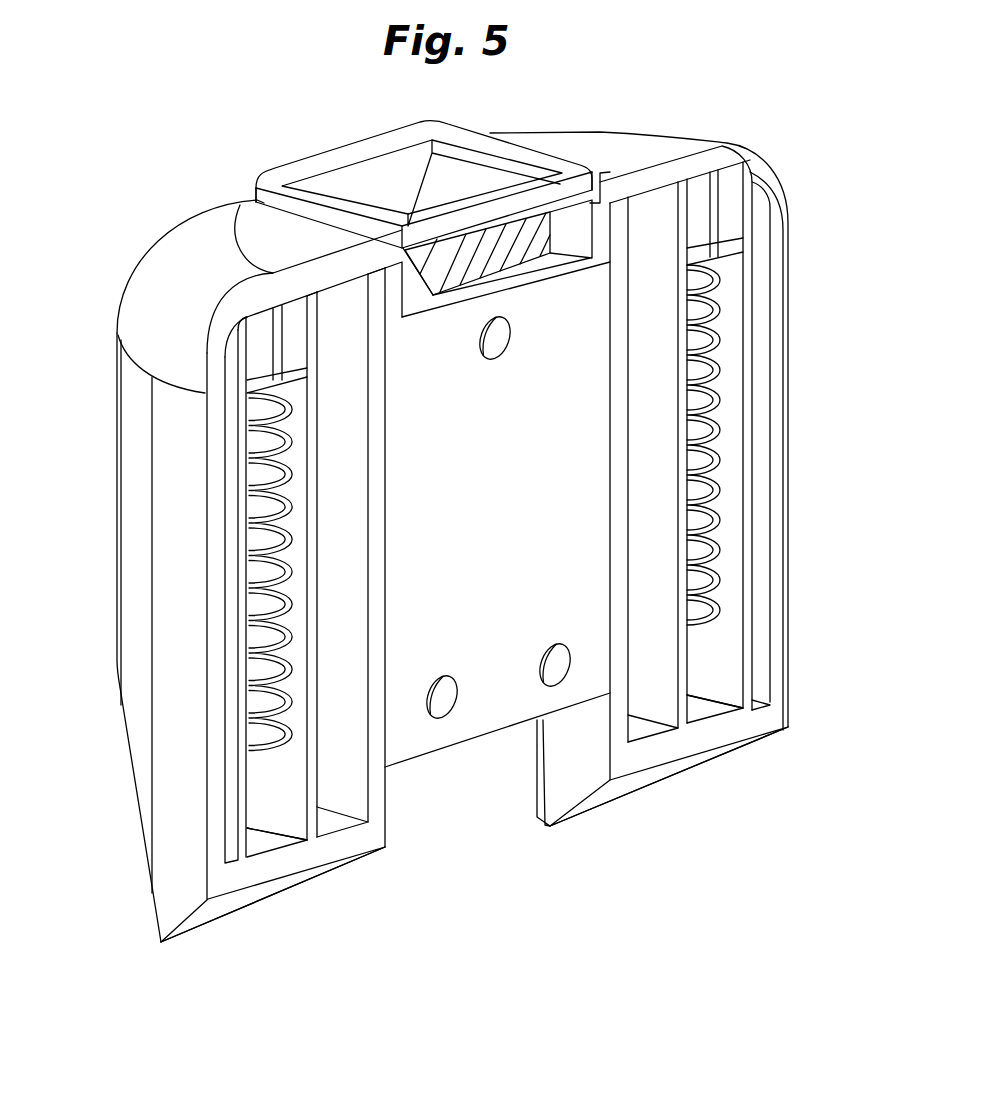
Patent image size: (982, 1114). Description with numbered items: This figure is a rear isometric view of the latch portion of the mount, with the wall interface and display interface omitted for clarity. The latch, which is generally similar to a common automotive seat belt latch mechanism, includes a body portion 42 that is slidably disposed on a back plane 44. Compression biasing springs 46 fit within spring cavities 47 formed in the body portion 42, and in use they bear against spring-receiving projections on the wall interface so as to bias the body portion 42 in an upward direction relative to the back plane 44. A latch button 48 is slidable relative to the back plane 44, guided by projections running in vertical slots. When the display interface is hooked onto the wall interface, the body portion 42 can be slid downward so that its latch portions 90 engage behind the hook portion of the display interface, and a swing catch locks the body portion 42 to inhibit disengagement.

The body portion 42 is at (687, 765).
The back plane 44 is at (533, 545).
The compression biasing springs 46 is at (260, 753).
The spring cavities 47 is at (263, 806).
The latch button 48 is at (403, 183).
The latch portions 90 is at (333, 873).